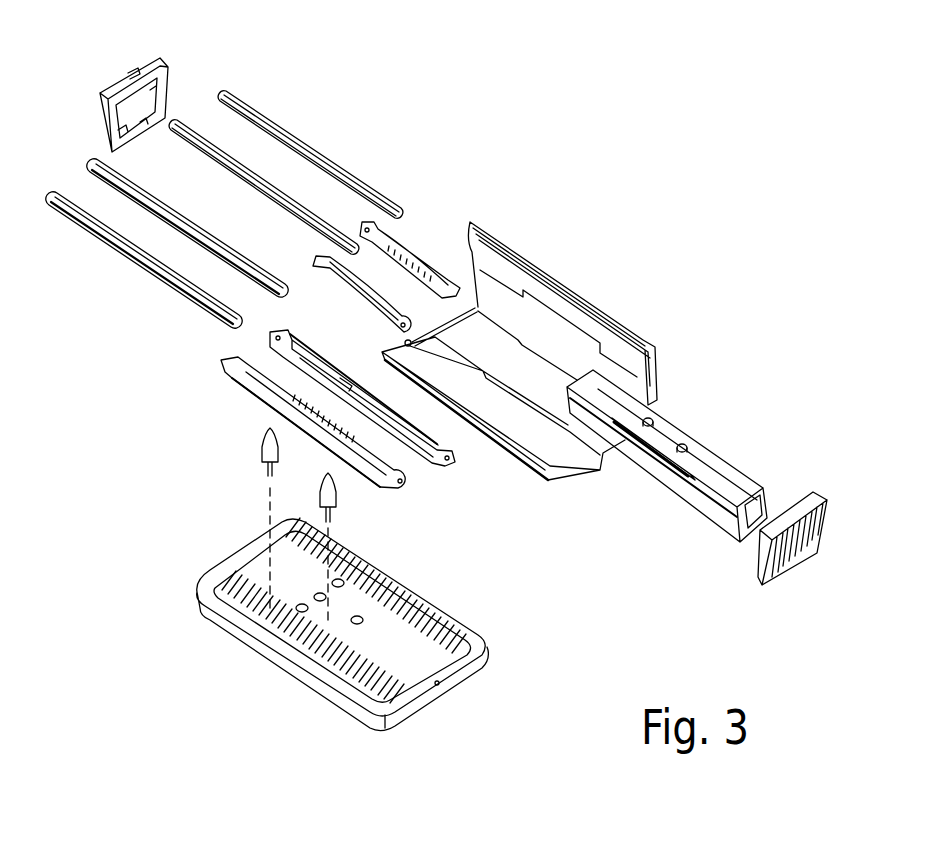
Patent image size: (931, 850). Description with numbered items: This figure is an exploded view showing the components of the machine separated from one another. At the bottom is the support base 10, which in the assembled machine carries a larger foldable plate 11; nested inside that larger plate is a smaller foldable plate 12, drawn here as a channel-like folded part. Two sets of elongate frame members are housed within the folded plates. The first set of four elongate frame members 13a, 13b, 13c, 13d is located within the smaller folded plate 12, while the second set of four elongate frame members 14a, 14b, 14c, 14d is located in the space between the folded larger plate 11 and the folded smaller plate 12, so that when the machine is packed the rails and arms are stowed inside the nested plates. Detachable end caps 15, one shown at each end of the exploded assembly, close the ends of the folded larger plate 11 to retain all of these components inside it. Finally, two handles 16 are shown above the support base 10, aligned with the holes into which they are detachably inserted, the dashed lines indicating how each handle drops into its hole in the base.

The support base 10 is at (305, 668).
The larger foldable plate 11 is at (508, 270).
The smaller foldable plate 12 is at (727, 484).
The elongate frame member 13a is at (297, 140).
The elongate frame member 13b is at (260, 194).
The elongate frame member 13c is at (418, 258).
The elongate frame member 13d is at (363, 305).
The elongate frame member 14a is at (90, 165).
The elongate frame member 14b is at (107, 240).
The elongate frame member 14c is at (437, 461).
The elongate frame member 14d is at (380, 487).
The detachable end cap 15 is at (128, 72).
The handle 16 is at (320, 486).